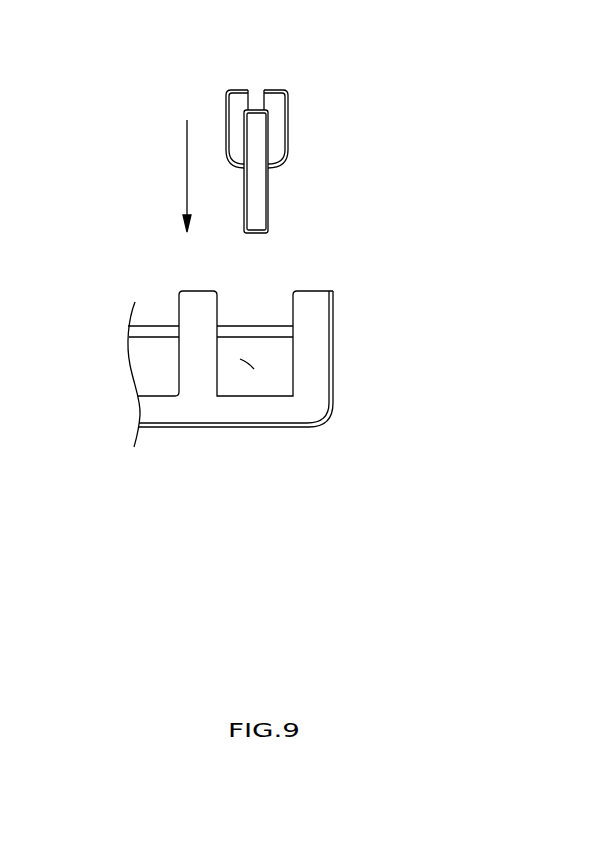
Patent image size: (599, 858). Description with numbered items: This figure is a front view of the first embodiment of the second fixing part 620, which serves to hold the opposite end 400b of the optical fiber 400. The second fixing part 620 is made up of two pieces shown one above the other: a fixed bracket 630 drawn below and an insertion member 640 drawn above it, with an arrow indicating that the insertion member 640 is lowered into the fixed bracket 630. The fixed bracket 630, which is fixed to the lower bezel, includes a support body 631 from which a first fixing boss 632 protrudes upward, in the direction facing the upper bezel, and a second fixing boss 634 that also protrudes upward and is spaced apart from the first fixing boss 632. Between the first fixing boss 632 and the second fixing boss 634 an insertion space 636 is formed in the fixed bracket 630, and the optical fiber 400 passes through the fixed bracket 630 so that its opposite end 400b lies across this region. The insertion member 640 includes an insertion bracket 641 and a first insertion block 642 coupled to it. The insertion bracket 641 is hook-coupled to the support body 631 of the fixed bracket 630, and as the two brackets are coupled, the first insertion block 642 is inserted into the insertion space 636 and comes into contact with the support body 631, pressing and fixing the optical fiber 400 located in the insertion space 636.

The second fixing part 620 is at (110, 8).
The fixed bracket 630 is at (283, 502).
The insertion member 640 is at (405, 58).
The first insertion block 642 is at (282, 100).
The insertion bracket 641 is at (267, 202).
The optical fiber 400 is at (423, 222).
The opposite end of the optical fiber 400b is at (255, 328).
The first fixing boss 632 is at (198, 297).
The second fixing boss 634 is at (315, 358).
The support body 631 is at (270, 410).
The insertion space 636 is at (245, 364).